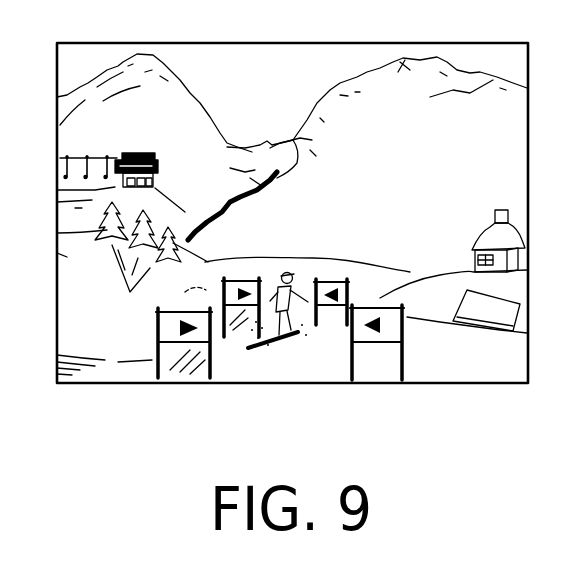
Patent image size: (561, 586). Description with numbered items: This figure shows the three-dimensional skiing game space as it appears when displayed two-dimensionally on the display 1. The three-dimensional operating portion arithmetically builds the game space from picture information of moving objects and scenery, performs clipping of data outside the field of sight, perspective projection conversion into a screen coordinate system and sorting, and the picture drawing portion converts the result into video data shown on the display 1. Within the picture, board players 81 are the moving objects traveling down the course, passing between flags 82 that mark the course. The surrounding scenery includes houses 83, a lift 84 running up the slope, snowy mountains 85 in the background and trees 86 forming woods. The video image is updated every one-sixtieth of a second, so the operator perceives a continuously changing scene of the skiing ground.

The display 1 is at (57, 110).
The board players 81 is at (288, 272).
The flags 82 is at (352, 328).
The houses 83 is at (193, 175).
The lift 84 is at (98, 156).
The snowy mountains 85 is at (402, 58).
The trees 86 is at (132, 292).